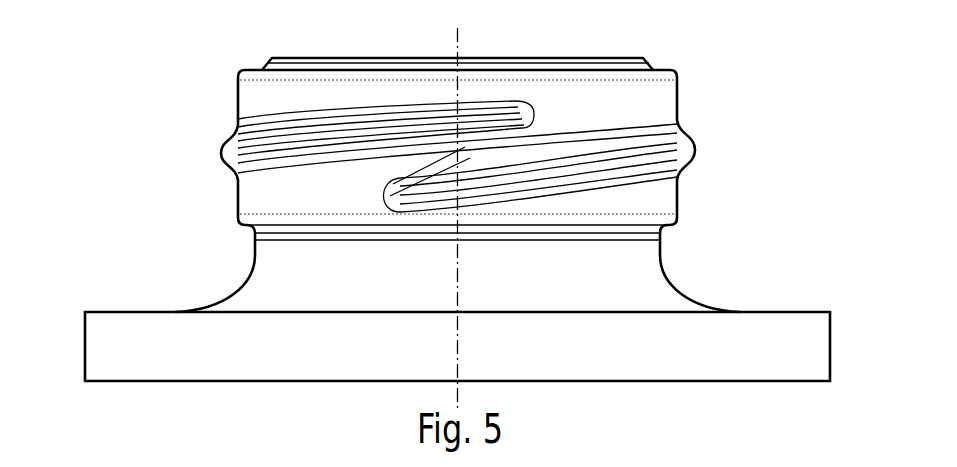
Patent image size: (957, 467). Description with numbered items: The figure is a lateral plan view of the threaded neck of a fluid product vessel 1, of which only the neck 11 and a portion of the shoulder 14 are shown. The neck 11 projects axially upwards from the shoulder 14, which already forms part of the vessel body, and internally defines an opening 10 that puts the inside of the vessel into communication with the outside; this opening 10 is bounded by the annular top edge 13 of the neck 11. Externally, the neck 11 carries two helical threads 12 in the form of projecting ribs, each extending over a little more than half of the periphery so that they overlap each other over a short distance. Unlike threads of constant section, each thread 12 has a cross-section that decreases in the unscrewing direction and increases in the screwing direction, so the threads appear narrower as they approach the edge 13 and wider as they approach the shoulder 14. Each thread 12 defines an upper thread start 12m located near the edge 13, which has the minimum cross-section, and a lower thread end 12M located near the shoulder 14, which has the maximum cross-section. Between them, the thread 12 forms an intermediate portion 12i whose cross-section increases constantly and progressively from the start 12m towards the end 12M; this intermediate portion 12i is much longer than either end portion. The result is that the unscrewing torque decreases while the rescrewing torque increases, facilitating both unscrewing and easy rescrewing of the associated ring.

The fluid product vessel 1 is at (716, 292).
The opening 10 is at (551, 100).
The neck 11 is at (655, 203).
The thread 12 is at (237, 147).
The intermediate portion 12i is at (252, 148).
The upper thread start 12m is at (470, 122).
The lower thread end 12M is at (402, 180).
The annular top edge 13 is at (658, 70).
The shoulder 14 is at (123, 311).